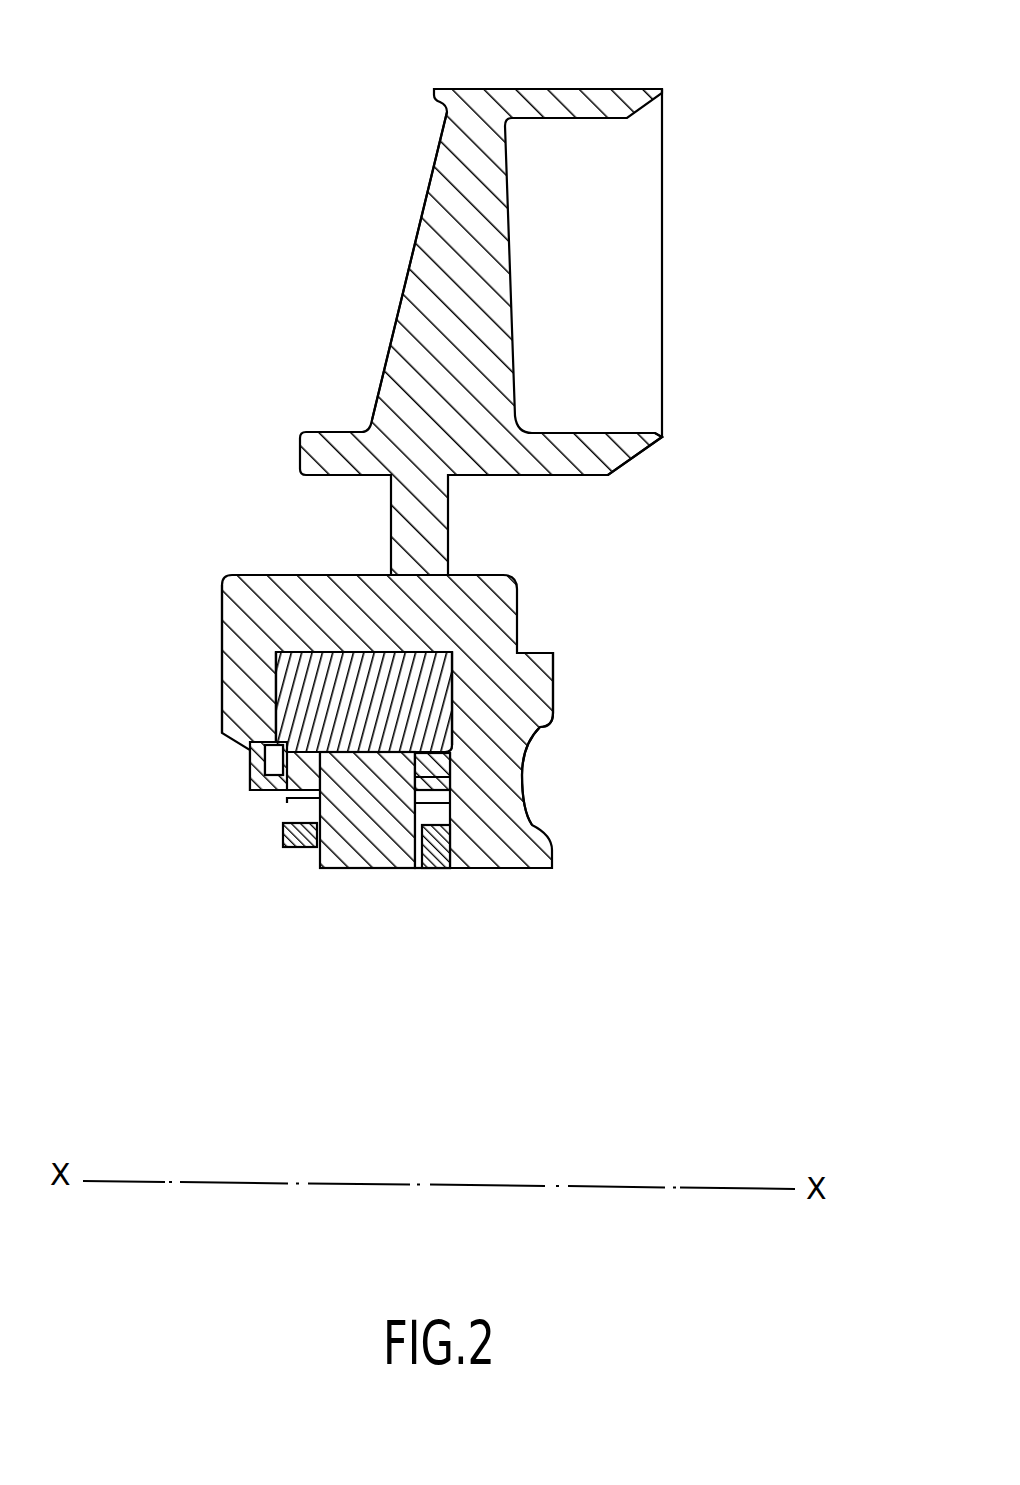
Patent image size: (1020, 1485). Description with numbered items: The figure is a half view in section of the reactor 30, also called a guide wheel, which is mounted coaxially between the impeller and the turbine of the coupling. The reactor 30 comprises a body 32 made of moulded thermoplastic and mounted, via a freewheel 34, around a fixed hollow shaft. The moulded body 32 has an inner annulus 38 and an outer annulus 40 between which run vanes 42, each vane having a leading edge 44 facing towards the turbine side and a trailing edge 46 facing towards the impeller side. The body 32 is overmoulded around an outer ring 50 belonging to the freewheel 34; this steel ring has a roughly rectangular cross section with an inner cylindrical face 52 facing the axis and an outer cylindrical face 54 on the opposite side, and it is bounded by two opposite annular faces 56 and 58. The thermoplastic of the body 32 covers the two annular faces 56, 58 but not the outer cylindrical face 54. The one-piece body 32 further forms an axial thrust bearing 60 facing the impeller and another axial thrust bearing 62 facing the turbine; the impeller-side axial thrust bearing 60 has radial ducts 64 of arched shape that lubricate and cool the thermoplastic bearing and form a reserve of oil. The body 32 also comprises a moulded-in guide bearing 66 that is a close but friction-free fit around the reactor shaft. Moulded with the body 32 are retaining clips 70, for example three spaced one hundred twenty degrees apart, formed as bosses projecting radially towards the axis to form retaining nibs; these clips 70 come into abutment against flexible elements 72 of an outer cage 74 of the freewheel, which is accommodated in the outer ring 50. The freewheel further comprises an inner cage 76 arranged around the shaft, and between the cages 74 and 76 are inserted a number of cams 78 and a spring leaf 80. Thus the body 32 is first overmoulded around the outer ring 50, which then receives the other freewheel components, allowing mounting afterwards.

The reactor 30 is at (616, 589).
The body 32 is at (260, 575).
The freewheel 34 is at (243, 796).
The inner annulus 38 is at (608, 452).
The outer annulus 40 is at (573, 88).
The vanes 42 is at (598, 299).
The leading edge 44 is at (391, 328).
The trailing edge 46 is at (662, 263).
The outer ring 50 is at (300, 715).
The inner cylindrical face 52 is at (450, 777).
The outer cylindrical face 54 is at (352, 651).
The annular face 56 is at (277, 660).
The annular face 58 is at (457, 683).
The axial thrust bearing 60 is at (555, 690).
The axial thrust bearing 62 is at (222, 620).
The radial ducts 64 is at (523, 798).
The guide bearing 66 is at (490, 870).
The retaining clips 70 is at (248, 757).
The flexible elements 72 is at (250, 762).
The outer cage 74 is at (272, 790).
The inner cage 76 is at (297, 848).
The cams 78 is at (365, 852).
The spring leaf 80 is at (290, 803).